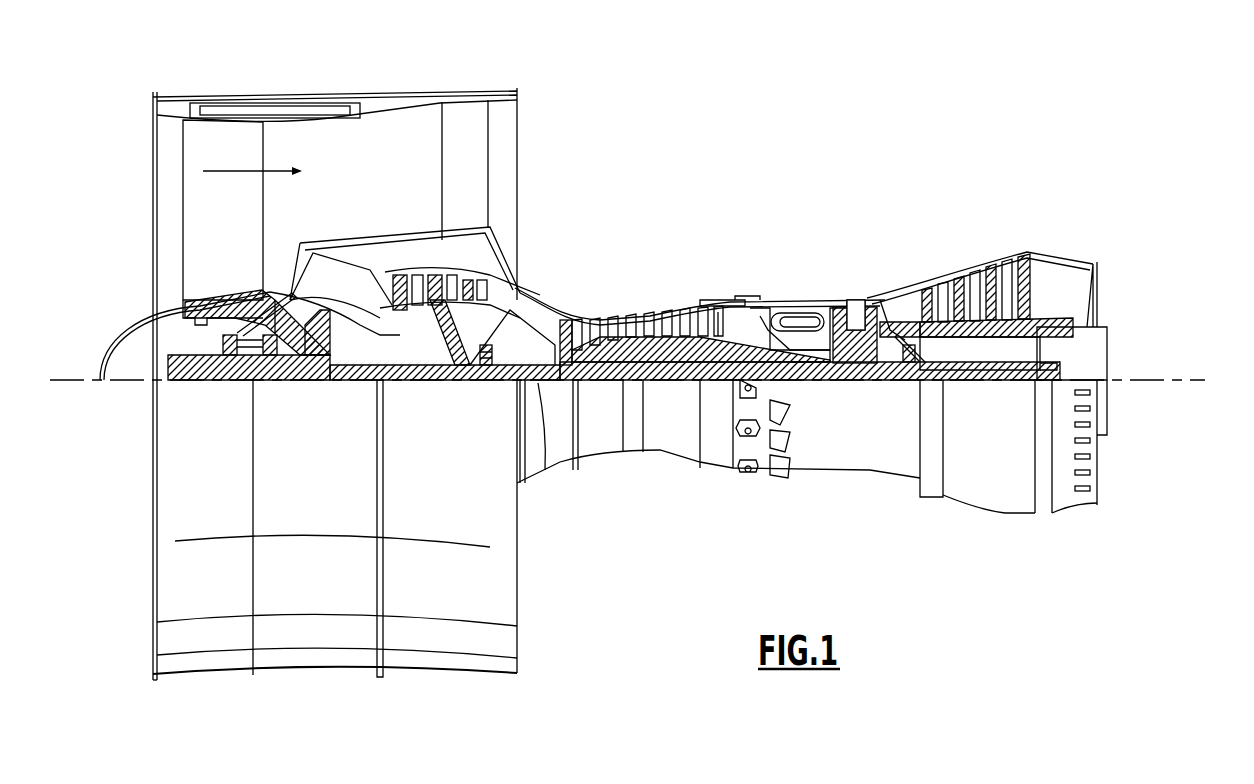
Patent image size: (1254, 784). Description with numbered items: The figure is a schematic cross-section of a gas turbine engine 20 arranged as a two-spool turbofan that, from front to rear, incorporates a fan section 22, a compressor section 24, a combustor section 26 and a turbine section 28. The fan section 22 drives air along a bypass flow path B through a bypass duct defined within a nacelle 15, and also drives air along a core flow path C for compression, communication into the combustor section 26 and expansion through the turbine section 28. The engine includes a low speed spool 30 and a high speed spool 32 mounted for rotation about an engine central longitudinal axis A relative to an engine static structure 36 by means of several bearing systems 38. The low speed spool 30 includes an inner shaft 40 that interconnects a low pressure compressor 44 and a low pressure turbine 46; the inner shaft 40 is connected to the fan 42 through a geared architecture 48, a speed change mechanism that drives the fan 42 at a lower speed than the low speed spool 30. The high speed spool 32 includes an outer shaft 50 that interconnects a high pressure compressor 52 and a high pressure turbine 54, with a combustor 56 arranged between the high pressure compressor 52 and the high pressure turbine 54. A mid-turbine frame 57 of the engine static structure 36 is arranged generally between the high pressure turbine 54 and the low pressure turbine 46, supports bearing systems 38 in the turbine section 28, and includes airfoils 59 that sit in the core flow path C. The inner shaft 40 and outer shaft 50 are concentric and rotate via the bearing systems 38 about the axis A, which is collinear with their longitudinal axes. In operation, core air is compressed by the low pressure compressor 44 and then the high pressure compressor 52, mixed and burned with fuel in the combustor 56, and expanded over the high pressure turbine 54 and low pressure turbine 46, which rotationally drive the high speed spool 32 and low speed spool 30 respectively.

The gas turbine engine 20 is at (792, 148).
The fan section 22 is at (262, 86).
The nacelle 15 is at (336, 100).
The fan 42 is at (238, 226).
The low pressure compressor 44 is at (438, 290).
The compressor section 24 is at (570, 278).
The high pressure compressor 52 is at (632, 318).
The high speed spool 32 is at (719, 318).
The combustor section 26 is at (790, 280).
The combustor 56 is at (792, 322).
The high pressure turbine 54 is at (855, 300).
The mid-turbine frame 57 is at (900, 292).
The turbine section 28 is at (940, 240).
The low pressure turbine 46 is at (982, 275).
The airfoils 59 is at (905, 322).
The geared architecture 48 is at (342, 362).
The bearing systems 38 is at (462, 370).
The inner shaft 40 is at (545, 470).
The low speed spool 30 is at (673, 390).
The engine static structure 36 is at (714, 474).
The outer shaft 50 is at (797, 384).
The engine central longitudinal axis A is at (1190, 380).
The bypass flow path B is at (241, 170).
The core flow path C is at (340, 278).